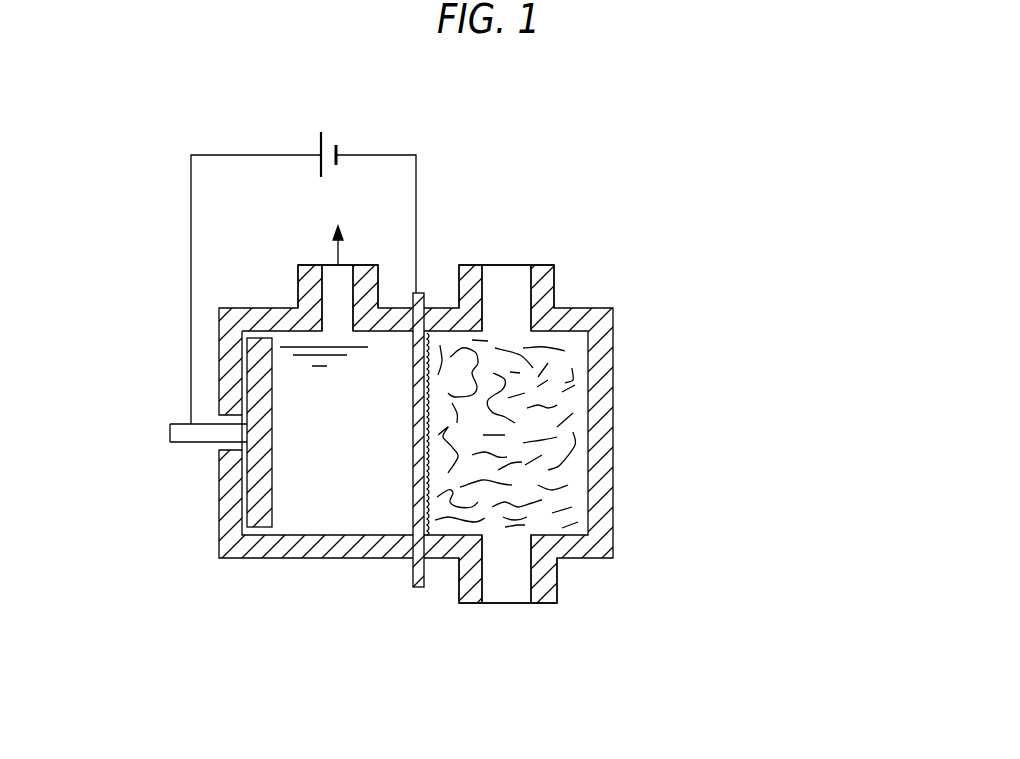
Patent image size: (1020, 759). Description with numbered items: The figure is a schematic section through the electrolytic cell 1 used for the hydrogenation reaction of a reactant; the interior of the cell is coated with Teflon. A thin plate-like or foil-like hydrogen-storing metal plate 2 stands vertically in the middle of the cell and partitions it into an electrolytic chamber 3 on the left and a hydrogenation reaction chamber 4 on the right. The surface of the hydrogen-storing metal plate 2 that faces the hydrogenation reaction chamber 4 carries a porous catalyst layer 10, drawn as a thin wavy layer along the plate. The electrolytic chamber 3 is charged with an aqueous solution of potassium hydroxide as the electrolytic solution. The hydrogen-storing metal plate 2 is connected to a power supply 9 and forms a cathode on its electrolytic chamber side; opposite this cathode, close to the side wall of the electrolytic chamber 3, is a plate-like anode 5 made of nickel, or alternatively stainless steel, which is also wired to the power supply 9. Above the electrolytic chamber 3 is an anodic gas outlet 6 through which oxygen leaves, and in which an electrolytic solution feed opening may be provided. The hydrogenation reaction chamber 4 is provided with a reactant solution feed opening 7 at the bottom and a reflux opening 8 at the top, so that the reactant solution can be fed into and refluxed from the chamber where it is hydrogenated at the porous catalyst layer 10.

The electrolytic cell 1 is at (620, 323).
The hydrogen-storing metal plate 2 is at (418, 582).
The electrolytic chamber 3 is at (288, 517).
The hydrogenation reaction chamber 4 is at (577, 472).
The anode 5 is at (256, 513).
The anodic gas outlet 6 is at (308, 292).
The reactant solution feed opening 7 is at (468, 595).
The reflux opening 8 is at (538, 272).
The power supply 9 is at (329, 130).
The porous catalyst layer 10 is at (428, 333).